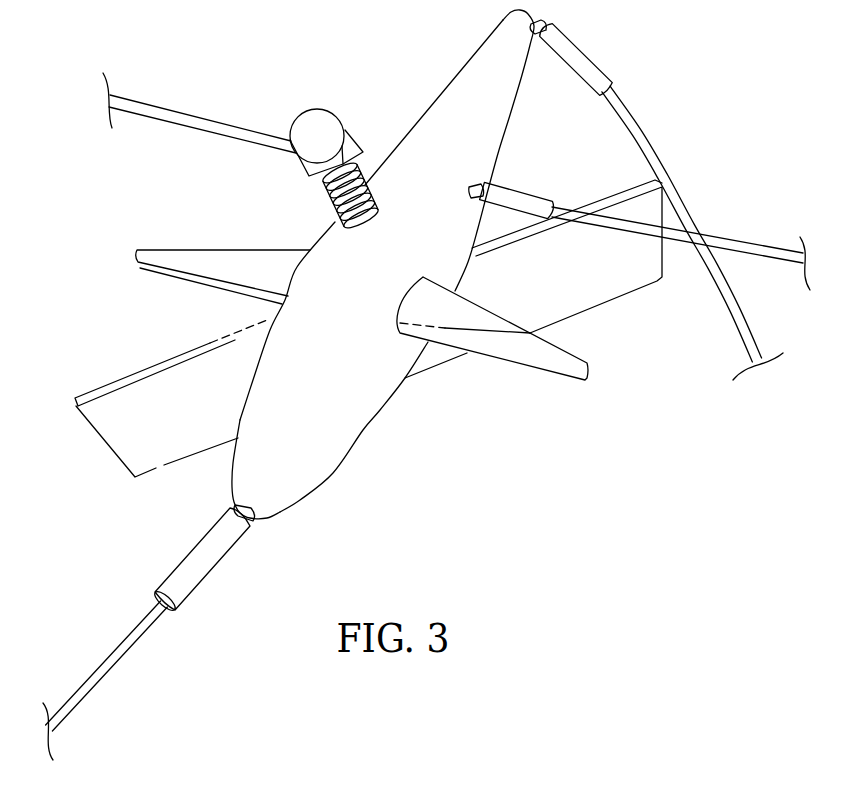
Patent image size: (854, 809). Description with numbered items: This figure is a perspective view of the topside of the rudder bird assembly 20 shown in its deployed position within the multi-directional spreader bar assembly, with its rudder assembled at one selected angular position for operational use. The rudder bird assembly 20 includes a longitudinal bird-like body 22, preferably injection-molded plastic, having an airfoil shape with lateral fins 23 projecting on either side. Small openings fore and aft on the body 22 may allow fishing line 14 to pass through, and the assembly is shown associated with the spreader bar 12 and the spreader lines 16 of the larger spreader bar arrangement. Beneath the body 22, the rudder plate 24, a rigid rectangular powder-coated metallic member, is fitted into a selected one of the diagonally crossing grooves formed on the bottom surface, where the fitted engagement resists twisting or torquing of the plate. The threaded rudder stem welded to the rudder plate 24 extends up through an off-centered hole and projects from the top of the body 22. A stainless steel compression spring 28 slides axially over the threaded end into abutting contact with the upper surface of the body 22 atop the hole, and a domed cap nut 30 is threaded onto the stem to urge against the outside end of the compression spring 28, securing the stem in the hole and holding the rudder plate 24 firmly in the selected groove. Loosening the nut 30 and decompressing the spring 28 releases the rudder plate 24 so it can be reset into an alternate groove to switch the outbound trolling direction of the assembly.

The spreader bar 12 is at (180, 112).
The fishing line 14 is at (92, 676).
The spreader lines 16 is at (633, 121).
The rudder bird assembly 20 is at (392, 472).
The rudder bird body 22 is at (303, 494).
The lateral fins 23 is at (147, 250).
The rudder plate 24 is at (110, 387).
The compression spring 28 is at (323, 200).
The domed cap nut 30 is at (321, 118).